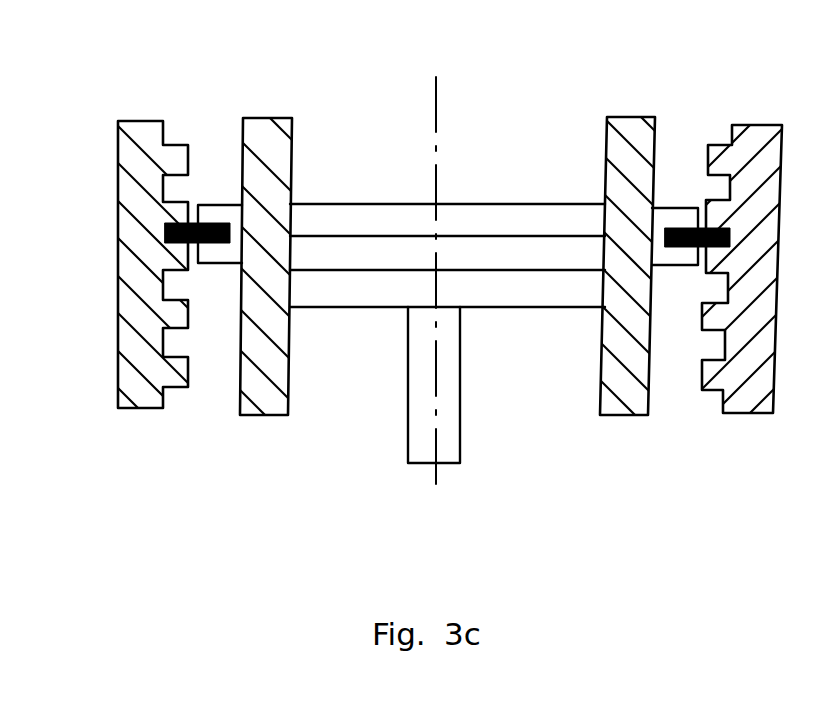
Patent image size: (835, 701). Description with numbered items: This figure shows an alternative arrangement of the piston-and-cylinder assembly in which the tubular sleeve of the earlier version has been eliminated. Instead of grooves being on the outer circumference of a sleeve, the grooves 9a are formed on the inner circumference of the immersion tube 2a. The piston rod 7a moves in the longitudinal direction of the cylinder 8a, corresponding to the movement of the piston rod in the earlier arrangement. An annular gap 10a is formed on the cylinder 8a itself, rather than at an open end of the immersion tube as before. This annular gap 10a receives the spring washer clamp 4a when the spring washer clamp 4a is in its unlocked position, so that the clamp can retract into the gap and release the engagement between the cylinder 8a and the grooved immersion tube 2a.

The immersion tube 2a is at (117, 293).
The spring washer clamp 4a is at (167, 233).
The piston rod 7a is at (462, 398).
The cylinder 8a is at (630, 117).
The grooves 9a is at (728, 192).
The annular gap 10a is at (233, 232).